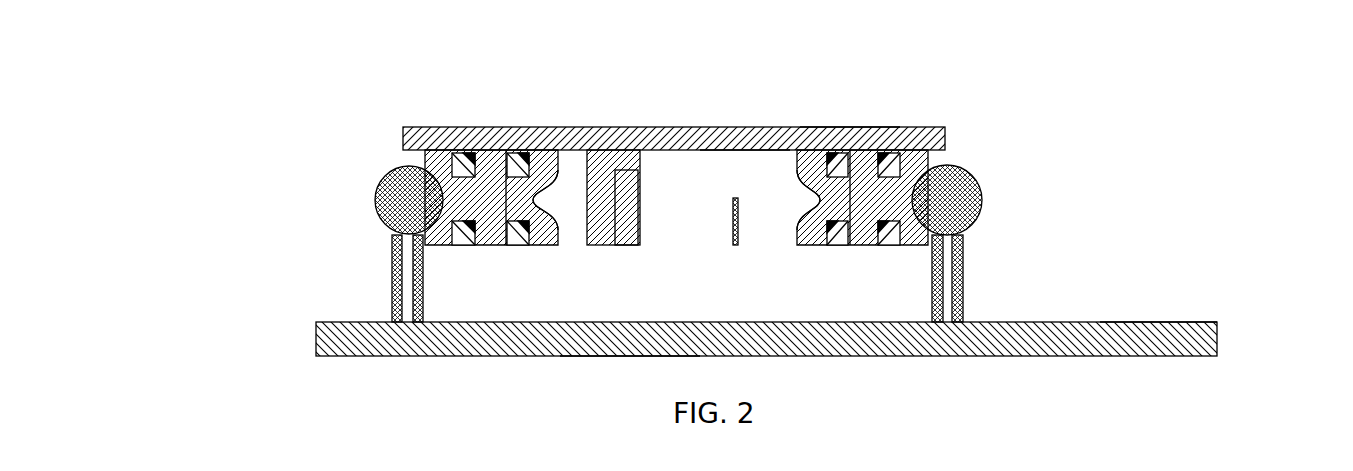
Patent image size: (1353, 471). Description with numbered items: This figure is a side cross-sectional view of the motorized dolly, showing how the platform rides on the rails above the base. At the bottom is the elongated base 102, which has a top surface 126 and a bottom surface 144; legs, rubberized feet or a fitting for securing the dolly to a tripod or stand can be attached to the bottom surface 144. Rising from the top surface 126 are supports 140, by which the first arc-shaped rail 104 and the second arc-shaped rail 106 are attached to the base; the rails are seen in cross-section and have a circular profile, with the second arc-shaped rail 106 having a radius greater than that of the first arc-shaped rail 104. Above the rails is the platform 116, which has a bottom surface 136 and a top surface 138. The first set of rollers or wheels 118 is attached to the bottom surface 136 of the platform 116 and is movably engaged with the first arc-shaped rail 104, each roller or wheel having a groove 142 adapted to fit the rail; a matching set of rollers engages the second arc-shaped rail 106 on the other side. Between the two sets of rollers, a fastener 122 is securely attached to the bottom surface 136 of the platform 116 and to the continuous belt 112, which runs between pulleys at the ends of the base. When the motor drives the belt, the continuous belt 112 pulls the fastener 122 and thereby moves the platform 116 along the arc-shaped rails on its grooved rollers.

The elongated base 102 is at (1007, 332).
The first arc-shaped rail 104 is at (987, 179).
The second arc-shaped rail 106 is at (383, 183).
The continuous belt 112 is at (732, 246).
The platform 116 is at (720, 145).
The first set of rollers or wheels 118 is at (937, 163).
The fastener 122 is at (587, 247).
The top surface of the elongated base 126 is at (1127, 309).
The bottom surface of the platform 136 is at (744, 156).
The top surface of the platform 138 is at (846, 114).
The supports 140 is at (393, 291).
The groove 142 is at (549, 200).
The bottom surface of the elongated base 144 is at (632, 360).